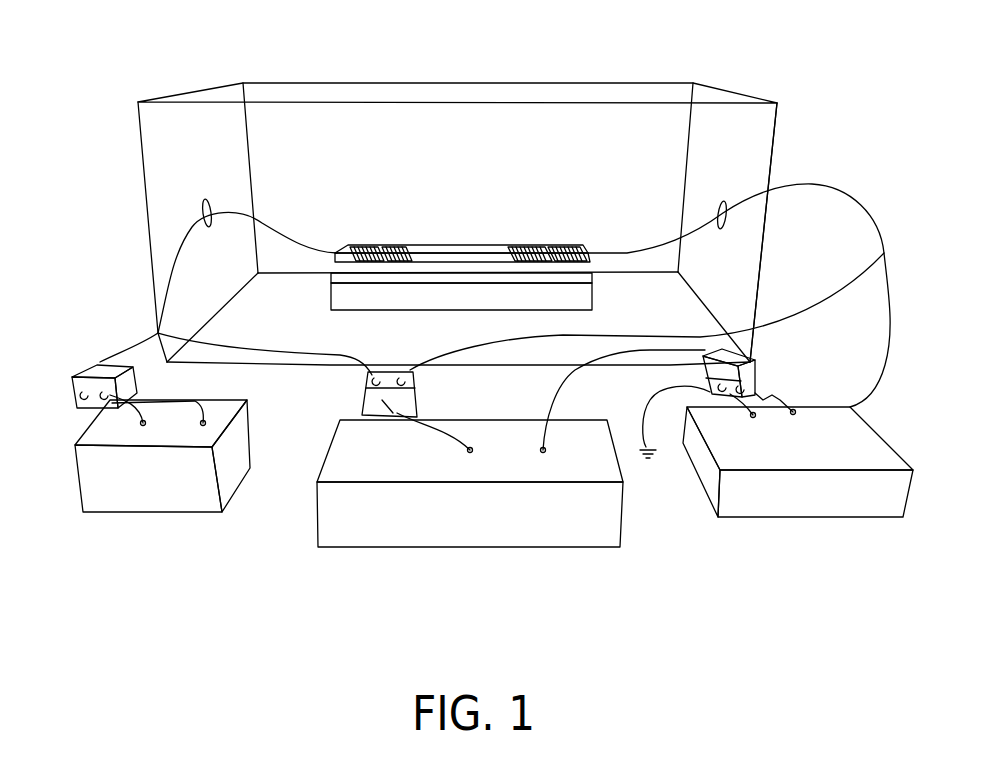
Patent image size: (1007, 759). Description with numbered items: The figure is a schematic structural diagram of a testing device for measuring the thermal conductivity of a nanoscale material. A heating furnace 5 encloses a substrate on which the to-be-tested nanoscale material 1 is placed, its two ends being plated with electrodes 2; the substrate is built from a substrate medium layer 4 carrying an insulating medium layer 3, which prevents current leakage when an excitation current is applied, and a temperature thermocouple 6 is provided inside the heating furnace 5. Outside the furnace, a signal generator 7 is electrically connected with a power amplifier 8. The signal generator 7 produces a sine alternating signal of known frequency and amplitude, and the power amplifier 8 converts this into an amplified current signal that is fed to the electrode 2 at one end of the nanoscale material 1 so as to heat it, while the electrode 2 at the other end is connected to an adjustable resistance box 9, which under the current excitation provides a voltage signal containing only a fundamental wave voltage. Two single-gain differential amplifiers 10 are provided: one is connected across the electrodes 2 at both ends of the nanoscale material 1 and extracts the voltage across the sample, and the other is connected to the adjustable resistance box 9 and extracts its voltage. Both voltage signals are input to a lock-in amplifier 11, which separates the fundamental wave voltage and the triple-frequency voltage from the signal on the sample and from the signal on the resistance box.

The to-be-tested nanoscale material 1 is at (463, 253).
The electrode 2 is at (537, 248).
The insulating medium layer 3 is at (585, 280).
The substrate medium layer 4 is at (585, 302).
The heating furnace 5 is at (775, 160).
The thermocouple 6 is at (292, 150).
The signal generator 7 is at (142, 495).
The power amplifier 8 is at (97, 368).
The adjustable resistance box 9 is at (826, 495).
The single-gain differential amplifier 10 is at (365, 397).
The lock-in amplifier 11 is at (466, 517).